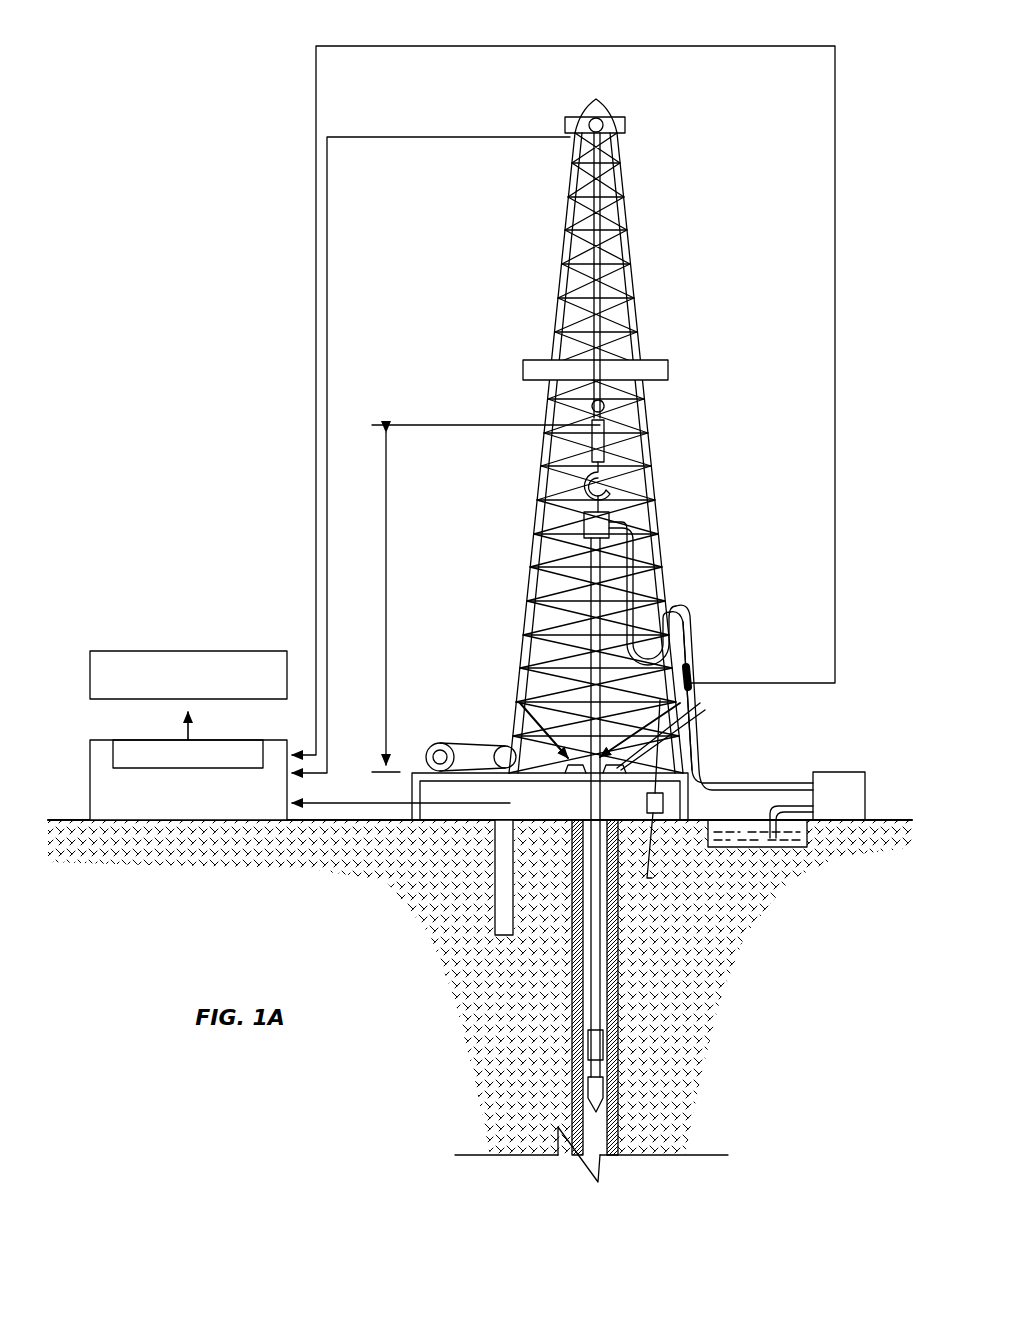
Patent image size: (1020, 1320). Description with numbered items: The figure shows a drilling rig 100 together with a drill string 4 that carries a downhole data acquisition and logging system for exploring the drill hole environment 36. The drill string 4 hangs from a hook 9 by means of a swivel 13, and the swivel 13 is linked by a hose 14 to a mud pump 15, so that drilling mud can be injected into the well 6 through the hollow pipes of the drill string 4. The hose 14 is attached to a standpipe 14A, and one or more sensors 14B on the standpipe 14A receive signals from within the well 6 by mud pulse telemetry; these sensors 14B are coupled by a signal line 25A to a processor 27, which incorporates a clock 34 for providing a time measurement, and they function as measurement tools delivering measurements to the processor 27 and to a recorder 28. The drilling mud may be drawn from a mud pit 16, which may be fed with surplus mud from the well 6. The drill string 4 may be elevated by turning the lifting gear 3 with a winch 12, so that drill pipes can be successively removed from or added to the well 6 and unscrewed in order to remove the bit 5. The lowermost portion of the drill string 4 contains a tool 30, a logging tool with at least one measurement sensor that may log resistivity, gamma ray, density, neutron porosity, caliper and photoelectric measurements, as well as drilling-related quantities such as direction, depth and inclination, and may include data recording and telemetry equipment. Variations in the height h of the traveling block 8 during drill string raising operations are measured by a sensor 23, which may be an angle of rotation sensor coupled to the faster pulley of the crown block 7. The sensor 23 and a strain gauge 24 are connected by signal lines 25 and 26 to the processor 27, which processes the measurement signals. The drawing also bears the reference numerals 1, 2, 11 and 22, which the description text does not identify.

The drilling rig 100 is at (262, 22).
The kelly hose 1 is at (640, 537).
The rig floor 2 is at (497, 820).
The lifting gear 3 is at (602, 413).
The drill string 4 is at (593, 967).
The bit 5 is at (596, 1098).
The well 6 is at (592, 1132).
The crown block 7 is at (605, 118).
The traveling block 8 is at (583, 430).
The hook 9 is at (534, 508).
The mud pit 11 is at (757, 845).
The winch 12 is at (487, 747).
The swivel 13 is at (533, 563).
The hose 14 is at (687, 623).
The standpipe 14A is at (692, 652).
The sensors 14B is at (692, 670).
The mud pump 15 is at (848, 772).
The mud pit 16 is at (760, 833).
The sensor 22 is at (494, 887).
The sensor 23 is at (600, 150).
The strain gauge 24 is at (658, 813).
The signal line 25 is at (330, 385).
The signal line 25A is at (838, 385).
The signal line 26 is at (405, 800).
The processor 27 is at (90, 740).
The recorder 28 is at (108, 651).
The tool 30 is at (592, 1043).
The clock 34 is at (188, 754).
The drill hole environment 36 is at (480, 987).
The height h is at (387, 548).